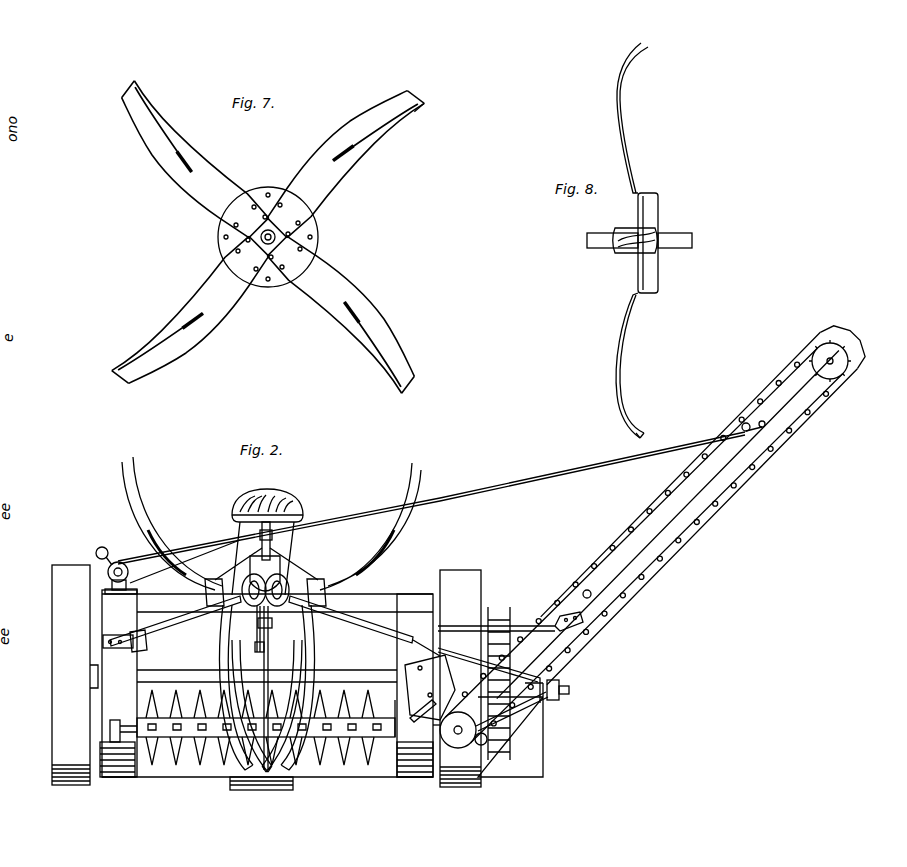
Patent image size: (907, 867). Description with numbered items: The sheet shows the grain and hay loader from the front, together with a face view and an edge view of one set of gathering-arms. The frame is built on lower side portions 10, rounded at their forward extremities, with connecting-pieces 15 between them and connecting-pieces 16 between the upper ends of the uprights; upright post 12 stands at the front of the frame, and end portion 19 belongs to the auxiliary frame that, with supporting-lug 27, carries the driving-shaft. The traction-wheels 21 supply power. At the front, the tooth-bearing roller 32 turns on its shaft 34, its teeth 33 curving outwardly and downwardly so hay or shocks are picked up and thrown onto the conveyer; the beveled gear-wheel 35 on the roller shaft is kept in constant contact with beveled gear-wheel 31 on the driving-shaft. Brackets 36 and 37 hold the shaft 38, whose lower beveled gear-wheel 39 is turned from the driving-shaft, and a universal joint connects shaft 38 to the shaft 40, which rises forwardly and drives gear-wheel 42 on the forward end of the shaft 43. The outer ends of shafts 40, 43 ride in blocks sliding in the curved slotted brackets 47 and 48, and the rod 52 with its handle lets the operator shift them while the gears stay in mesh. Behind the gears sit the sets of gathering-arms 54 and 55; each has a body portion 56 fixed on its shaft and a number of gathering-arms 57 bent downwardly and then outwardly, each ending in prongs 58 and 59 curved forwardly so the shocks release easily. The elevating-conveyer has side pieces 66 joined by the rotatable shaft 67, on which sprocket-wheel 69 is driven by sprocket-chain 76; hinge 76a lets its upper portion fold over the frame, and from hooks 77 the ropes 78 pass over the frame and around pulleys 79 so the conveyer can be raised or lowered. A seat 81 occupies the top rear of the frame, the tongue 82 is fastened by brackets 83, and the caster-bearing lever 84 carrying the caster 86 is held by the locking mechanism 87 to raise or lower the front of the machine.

In FIG. 2, the lower side portions 10 is at (120, 778).
In FIG. 2, the upright post 12 is at (135, 666).
In FIG. 2, the connecting-pieces 15 is at (400, 655).
In FIG. 2, the connecting-pieces 16 is at (325, 595).
In FIG. 2, the end portion 19 is at (529, 779).
In FIG. 2, the traction-wheels 21 is at (67, 565).
In FIG. 2, the supporting-lug 27 is at (524, 733).
In FIG. 2, the beveled gear-wheel 31 is at (450, 746).
In FIG. 2, the tooth-bearing roller 32 is at (213, 733).
In FIG. 2, the teeth 33 is at (326, 712).
In FIG. 2, the shaft 34 is at (393, 736).
In FIG. 2, the beveled gear-wheel 35 is at (440, 748).
In FIG. 2, the bracket 36 is at (438, 652).
In FIG. 2, the bracket 37 is at (418, 695).
In FIG. 2, the shaft 38 is at (440, 695).
In FIG. 2, the beveled gear-wheel 39 is at (476, 734).
In FIG. 8, the shaft 40 is at (676, 233).
In FIG. 2, the shaft 40 is at (352, 622).
In FIG. 2, the gear-wheel 42 is at (251, 607).
In FIG. 2, the shaft 43 is at (186, 628).
In FIG. 2, the bracket 47 is at (278, 607).
In FIG. 2, the bracket 48 is at (273, 572).
In FIG. 2, the rod 52 is at (275, 557).
In FIG. 2, the set of gathering-arms 54 is at (348, 551).
In FIG. 2, the set of gathering-arms 55 is at (163, 543).
In FIG. 7, the body portion 56 is at (261, 188).
In FIG. 8, the body portion 56 is at (638, 268).
In FIG. 7, the gathering-arms 57 is at (350, 127).
In FIG. 8, the gathering-arms 57 is at (629, 333).
In FIG. 7, the prong 58 is at (400, 95).
In FIG. 8, the prong 58 is at (641, 437).
In FIG. 7, the prong 59 is at (426, 104).
In FIG. 8, the prong 59 is at (644, 430).
In FIG. 2, the side pieces 66 is at (768, 377).
In FIG. 2, the rotatable shaft 67 is at (838, 365).
In FIG. 2, the sprocket-wheel 69 is at (851, 348).
In FIG. 2, the sprocket-chain 76 is at (824, 413).
In FIG. 2, the hinge 76a is at (585, 590).
In FIG. 2, the hook 77 is at (765, 428).
In FIG. 2, the ropes 78 is at (526, 478).
In FIG. 2, the pulleys 79 is at (109, 556).
In FIG. 2, the seat 81 is at (301, 505).
In FIG. 2, the tongue 82 is at (560, 684).
In FIG. 2, the brackets 83 is at (545, 702).
In FIG. 2, the caster-bearing lever 84 is at (269, 660).
In FIG. 2, the caster 86 is at (265, 790).
In FIG. 2, the locking mechanism 87 is at (259, 642).